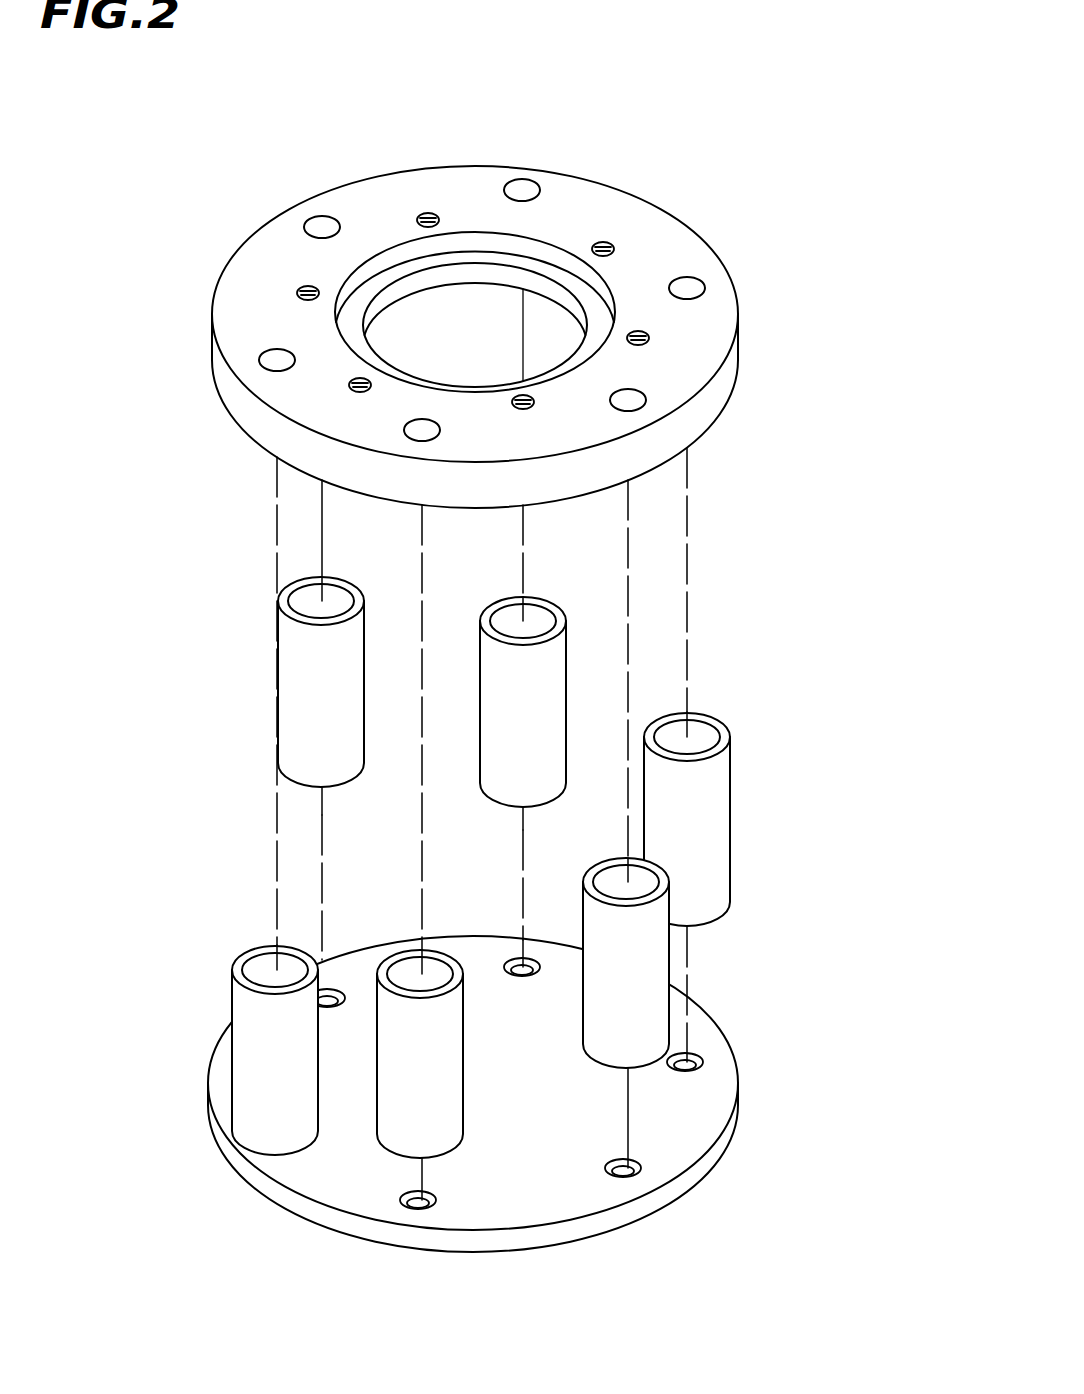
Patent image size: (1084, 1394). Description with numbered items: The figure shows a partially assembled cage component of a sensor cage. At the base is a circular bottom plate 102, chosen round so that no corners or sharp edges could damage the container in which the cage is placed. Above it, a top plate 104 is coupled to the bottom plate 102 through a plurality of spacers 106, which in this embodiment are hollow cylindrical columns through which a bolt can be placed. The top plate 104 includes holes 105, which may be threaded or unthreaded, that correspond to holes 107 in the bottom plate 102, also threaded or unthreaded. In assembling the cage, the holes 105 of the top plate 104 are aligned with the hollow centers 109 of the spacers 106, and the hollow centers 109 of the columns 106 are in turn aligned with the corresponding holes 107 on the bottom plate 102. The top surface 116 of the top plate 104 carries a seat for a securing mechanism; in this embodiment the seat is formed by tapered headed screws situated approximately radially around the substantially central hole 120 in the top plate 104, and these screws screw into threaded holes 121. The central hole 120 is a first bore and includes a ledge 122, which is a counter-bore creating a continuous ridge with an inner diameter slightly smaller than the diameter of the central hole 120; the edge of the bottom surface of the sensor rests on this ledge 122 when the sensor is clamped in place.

The bottom plate 102 is at (567, 1121).
The top plate 104 is at (530, 283).
The holes 105 is at (440, 428).
The spacers 106 is at (566, 867).
The holes 107 is at (437, 1202).
The hollow centers 109 is at (698, 732).
The top surface 116 is at (652, 227).
The central hole 120 is at (553, 247).
The threaded holes 121 is at (427, 210).
The ledge 122 is at (402, 267).